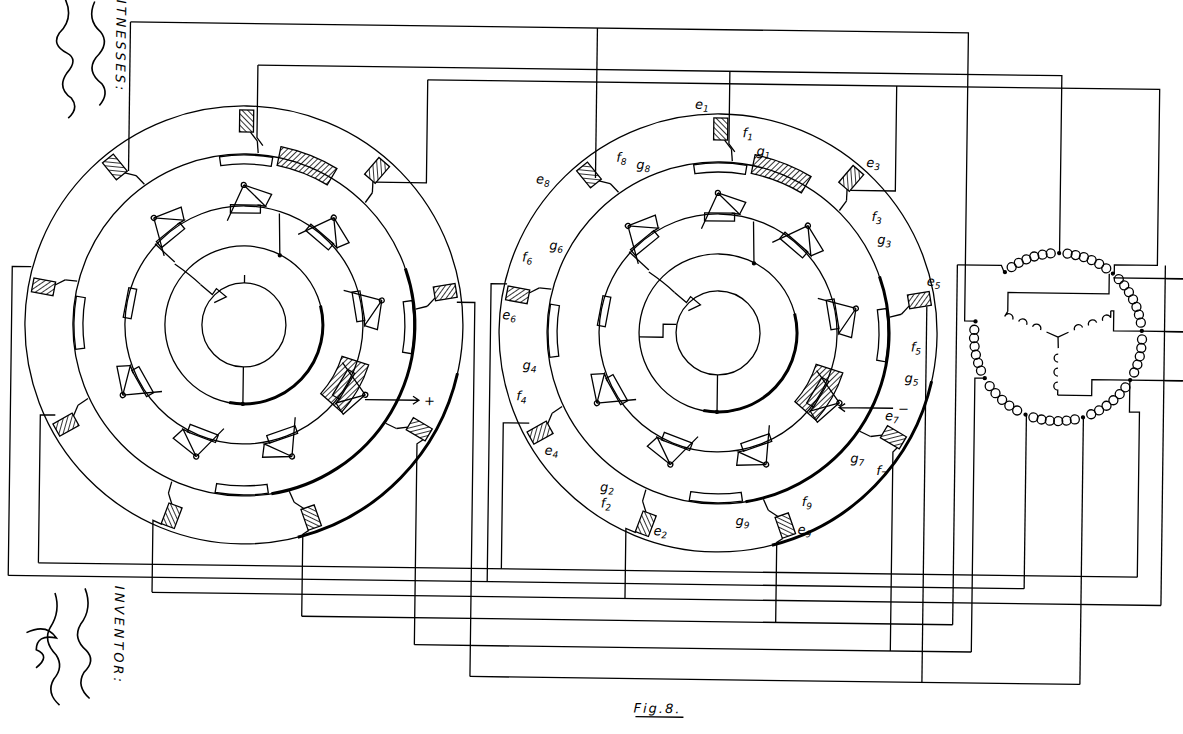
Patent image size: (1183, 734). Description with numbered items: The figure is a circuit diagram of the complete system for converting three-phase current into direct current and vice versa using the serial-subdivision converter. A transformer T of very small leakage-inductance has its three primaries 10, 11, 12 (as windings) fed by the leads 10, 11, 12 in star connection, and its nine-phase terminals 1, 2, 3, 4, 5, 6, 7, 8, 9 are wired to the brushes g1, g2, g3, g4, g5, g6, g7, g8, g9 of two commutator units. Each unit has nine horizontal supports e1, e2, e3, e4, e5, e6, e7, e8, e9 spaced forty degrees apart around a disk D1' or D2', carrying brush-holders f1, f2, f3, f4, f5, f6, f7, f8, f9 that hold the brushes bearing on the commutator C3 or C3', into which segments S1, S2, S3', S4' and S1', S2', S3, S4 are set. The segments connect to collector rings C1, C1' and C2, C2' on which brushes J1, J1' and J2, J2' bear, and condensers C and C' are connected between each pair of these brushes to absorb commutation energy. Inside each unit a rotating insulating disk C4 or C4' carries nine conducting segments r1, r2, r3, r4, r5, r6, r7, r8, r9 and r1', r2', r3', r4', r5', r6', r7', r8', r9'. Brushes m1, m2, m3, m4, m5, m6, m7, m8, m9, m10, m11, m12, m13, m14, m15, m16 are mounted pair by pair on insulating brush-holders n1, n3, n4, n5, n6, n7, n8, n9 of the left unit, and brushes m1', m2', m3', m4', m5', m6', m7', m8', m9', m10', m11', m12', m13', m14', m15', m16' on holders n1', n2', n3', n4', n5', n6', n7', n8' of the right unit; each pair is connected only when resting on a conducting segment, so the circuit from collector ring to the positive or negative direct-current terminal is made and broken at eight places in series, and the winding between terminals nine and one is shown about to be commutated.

The disk D1' is at (244, 321).
The disk D2' is at (719, 333).
The collector ring C1 is at (244, 325).
The collector ring C1' is at (244, 309).
The collector ring C2 is at (718, 333).
The collector ring C2' is at (700, 317).
The commutator C3' is at (270, 325).
The commutator C3 is at (718, 333).
The rotating insulating disk C4' is at (246, 324).
The rotating insulating disk C4 is at (721, 332).
The condenser C is at (190, 272).
The condenser C' is at (667, 280).
The brush J1 is at (165, 255).
The brush J1' is at (220, 281).
The brush J2 is at (639, 263).
The brush J2' is at (694, 289).
The commutator segment S1 is at (235, 152).
The commutator segment S2 is at (397, 338).
The commutator segment S3' is at (242, 505).
The commutator segment S4' is at (60, 323).
The commutator segment S1' is at (709, 160).
The commutator segment S2' is at (871, 347).
The commutator segment S3 is at (716, 513).
The commutator segment S4 is at (534, 331).
The horizontal support e1 is at (244, 110).
The horizontal support e2 is at (176, 531).
The horizontal support e3 is at (390, 164).
The horizontal support e4 is at (72, 435).
The horizontal support e5 is at (456, 282).
The horizontal support e6 is at (40, 299).
The horizontal support e7 is at (430, 444).
The horizontal support e8 is at (96, 166).
The horizontal support e9 is at (322, 528).
The brush-holder f1 is at (264, 129).
The brush-holder f2 is at (155, 500).
The brush-holder f3 is at (390, 199).
The brush-holder f4 is at (58, 398).
The brush-holder f5 is at (438, 324).
The brush-holder f6 is at (56, 263).
The brush-holder f7 is at (381, 454).
The brush-holder f8 is at (140, 157).
The brush-holder f9 is at (287, 516).
The brush g1 is at (276, 144).
The brush g2 is at (146, 485).
The brush g3 is at (394, 218).
The brush g4 is at (65, 375).
The brush g5 is at (431, 343).
The brush g6 is at (78, 255).
The brush g7 is at (386, 444).
The brush g8 is at (158, 166).
The brush g9 is at (268, 508).
The conducting segment r1 is at (245, 219).
The conducting segment r2 is at (309, 249).
The conducting segment r3 is at (346, 310).
The conducting segment r4 is at (322, 385).
The conducting segment r5 is at (278, 423).
The conducting segment r6 is at (206, 424).
The conducting segment r7 is at (151, 377).
The conducting segment r8 is at (138, 305).
The conducting segment r9 is at (177, 244).
The insulating brush-holder n1 is at (132, 220).
The insulating brush-holder n3 is at (336, 203).
The insulating brush-holder n4 is at (389, 283).
The insulating brush-holder n5 is at (364, 418).
The insulating brush-holder n6 is at (288, 471).
The insulating brush-holder n7 is at (174, 458).
The insulating brush-holder n8 is at (102, 378).
The pivot n9 is at (231, 179).
The brush m1 is at (163, 223).
The brush m2 is at (175, 223).
The brush m3 is at (242, 198).
The brush m4 is at (252, 203).
The brush m5 is at (319, 224).
The brush m6 is at (342, 235).
The brush m7 is at (371, 302).
The brush m8 is at (376, 318).
The brush m9 is at (340, 411).
The brush m10 is at (325, 414).
The brush m11 is at (255, 434).
The brush m12 is at (249, 445).
The brush m13 is at (185, 422).
The brush m14 is at (161, 424).
The brush m15 is at (141, 358).
The brush m16 is at (118, 340).
The conducting segment r1' is at (719, 228).
The conducting segment r2' is at (783, 258).
The conducting segment r3' is at (821, 319).
The conducting segment r4' is at (796, 394).
The conducting segment r5' is at (752, 431).
The conducting segment r6' is at (681, 432).
The conducting segment r7' is at (626, 384).
The conducting segment r8' is at (614, 313).
The conducting segment r9' is at (652, 254).
The insulating brush-holder n1' is at (607, 228).
The insulating brush-holder n2' is at (705, 187).
The insulating brush-holder n3' is at (812, 212).
The insulating brush-holder n4' is at (864, 290).
The insulating brush-holder n5' is at (840, 428).
The insulating brush-holder n6' is at (763, 480).
The insulating brush-holder n7' is at (647, 467).
The insulating brush-holder n8' is at (576, 386).
The brush m1' is at (637, 232).
The brush m2' is at (650, 230).
The brush m3' is at (717, 206).
The brush m4' is at (728, 211).
The brush m5' is at (794, 232).
The brush m6' is at (818, 244).
The brush m7' is at (846, 310).
The brush m8' is at (852, 326).
The brush m9' is at (815, 419).
The brush m10' is at (799, 423).
The brush m11' is at (729, 442).
The brush m12' is at (723, 453).
The brush m13' is at (659, 429).
The brush m14' is at (635, 432).
The brush m15' is at (616, 365).
The brush m16' is at (593, 347).
The transformer T is at (1058, 303).
The nine-phase terminal 1 is at (1059, 267).
The nine-phase terminal 2 is at (1104, 285).
The nine-phase terminal 3 is at (1131, 328).
The nine-phase terminal 4 is at (1122, 373).
The nine-phase terminal 5 is at (1083, 410).
The nine-phase terminal 6 is at (1030, 408).
The nine-phase terminal 7 is at (991, 376).
The nine-phase terminal 8 is at (982, 328).
The nine-phase terminal 9 is at (1009, 282).
The lead 10 is at (1174, 270).
The lead 11 is at (1174, 324).
The lead 12 is at (1174, 372).